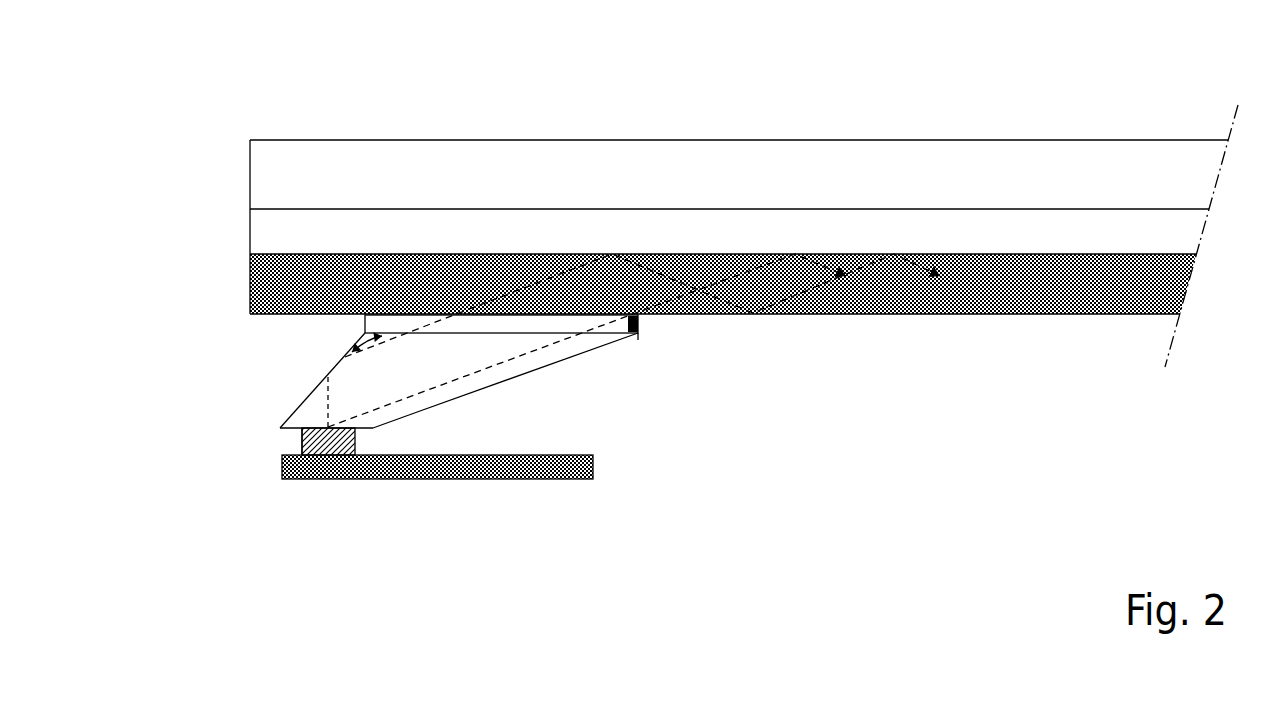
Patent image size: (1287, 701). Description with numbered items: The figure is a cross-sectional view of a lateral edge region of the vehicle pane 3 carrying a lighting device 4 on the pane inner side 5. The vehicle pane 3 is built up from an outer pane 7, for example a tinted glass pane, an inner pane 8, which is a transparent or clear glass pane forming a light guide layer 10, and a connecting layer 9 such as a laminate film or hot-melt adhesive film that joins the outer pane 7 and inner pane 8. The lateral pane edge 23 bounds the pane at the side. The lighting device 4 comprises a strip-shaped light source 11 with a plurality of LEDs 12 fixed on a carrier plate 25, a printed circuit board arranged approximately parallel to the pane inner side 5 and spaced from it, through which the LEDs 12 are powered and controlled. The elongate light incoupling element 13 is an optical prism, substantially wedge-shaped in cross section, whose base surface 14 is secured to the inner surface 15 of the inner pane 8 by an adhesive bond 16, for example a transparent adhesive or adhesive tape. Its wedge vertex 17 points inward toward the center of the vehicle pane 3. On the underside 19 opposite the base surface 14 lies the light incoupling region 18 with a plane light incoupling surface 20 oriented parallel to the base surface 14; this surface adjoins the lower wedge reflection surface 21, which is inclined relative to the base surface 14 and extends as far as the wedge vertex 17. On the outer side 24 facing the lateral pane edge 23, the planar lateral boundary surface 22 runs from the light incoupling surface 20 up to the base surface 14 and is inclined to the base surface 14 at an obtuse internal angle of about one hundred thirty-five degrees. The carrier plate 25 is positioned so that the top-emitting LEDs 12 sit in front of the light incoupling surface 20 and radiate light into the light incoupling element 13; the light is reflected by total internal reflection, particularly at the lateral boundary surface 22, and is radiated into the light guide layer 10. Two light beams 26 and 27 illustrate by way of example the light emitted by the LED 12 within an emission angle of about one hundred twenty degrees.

The vehicle pane 3 is at (1058, 128).
The lighting device 4 is at (193, 423).
The pane inner side 5 is at (1007, 327).
The outer pane 7 is at (1187, 153).
The inner pane 8 is at (1160, 283).
The connecting layer 9 is at (1173, 217).
The light guide layer 10 is at (1125, 293).
The light source 11 is at (295, 443).
The LED 12 is at (333, 451).
The light incoupling element 13 is at (523, 361).
The base surface 14 is at (487, 328).
The inner surface 15 is at (1103, 318).
The adhesive bond 16 is at (640, 326).
The wedge vertex 17 is at (632, 346).
The light incoupling region 18 is at (313, 430).
The underside 19 is at (388, 442).
The light incoupling surface 20 is at (367, 440).
The wedge reflection surface 21 is at (526, 381).
The lateral boundary surface 22 is at (313, 390).
The lateral pane edge 23 is at (241, 128).
The outer side 24 is at (269, 396).
The carrier plate 25 is at (517, 470).
The light beam 26 is at (794, 292).
The light beam 27 is at (913, 290).